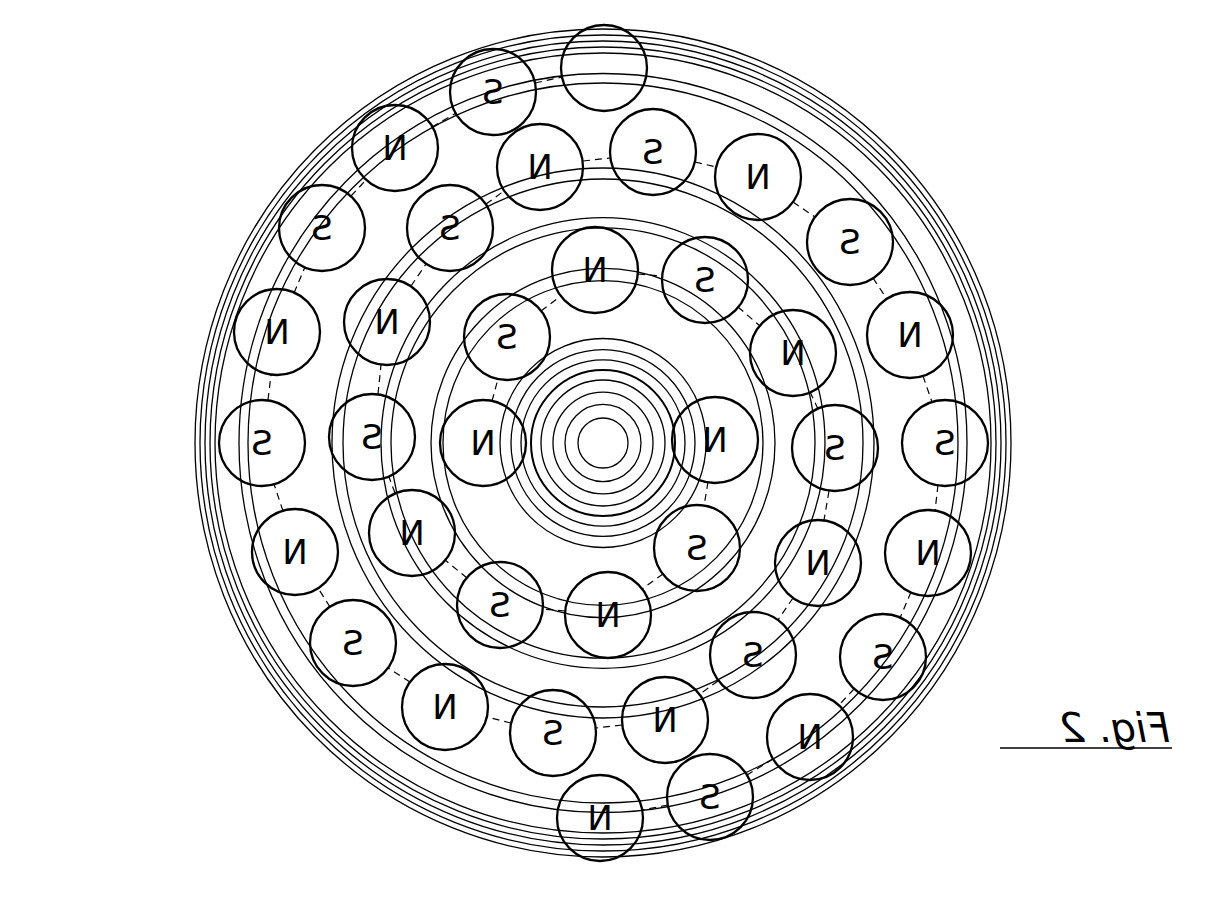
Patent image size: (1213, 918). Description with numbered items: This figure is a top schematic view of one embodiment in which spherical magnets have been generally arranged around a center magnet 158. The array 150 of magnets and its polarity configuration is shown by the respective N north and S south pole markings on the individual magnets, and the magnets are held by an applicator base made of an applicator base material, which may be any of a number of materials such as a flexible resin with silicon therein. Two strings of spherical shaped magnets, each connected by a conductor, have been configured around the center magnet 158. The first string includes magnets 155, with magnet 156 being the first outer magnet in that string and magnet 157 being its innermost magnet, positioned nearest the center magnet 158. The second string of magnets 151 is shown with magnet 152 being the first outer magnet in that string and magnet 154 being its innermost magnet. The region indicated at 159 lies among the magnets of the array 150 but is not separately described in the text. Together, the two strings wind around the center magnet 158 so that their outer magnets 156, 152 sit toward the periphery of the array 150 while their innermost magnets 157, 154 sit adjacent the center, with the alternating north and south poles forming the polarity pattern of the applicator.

The array 150 is at (985, 218).
The second string of magnets 151 is at (940, 522).
The first outer magnet 152 is at (567, 823).
The innermost magnet 154 is at (736, 430).
The magnets 155 is at (375, 128).
The first outer magnet 156 is at (633, 63).
The innermost magnet 157 is at (483, 468).
The center magnet 158 is at (603, 420).
The spacing ring 159 is at (713, 120).